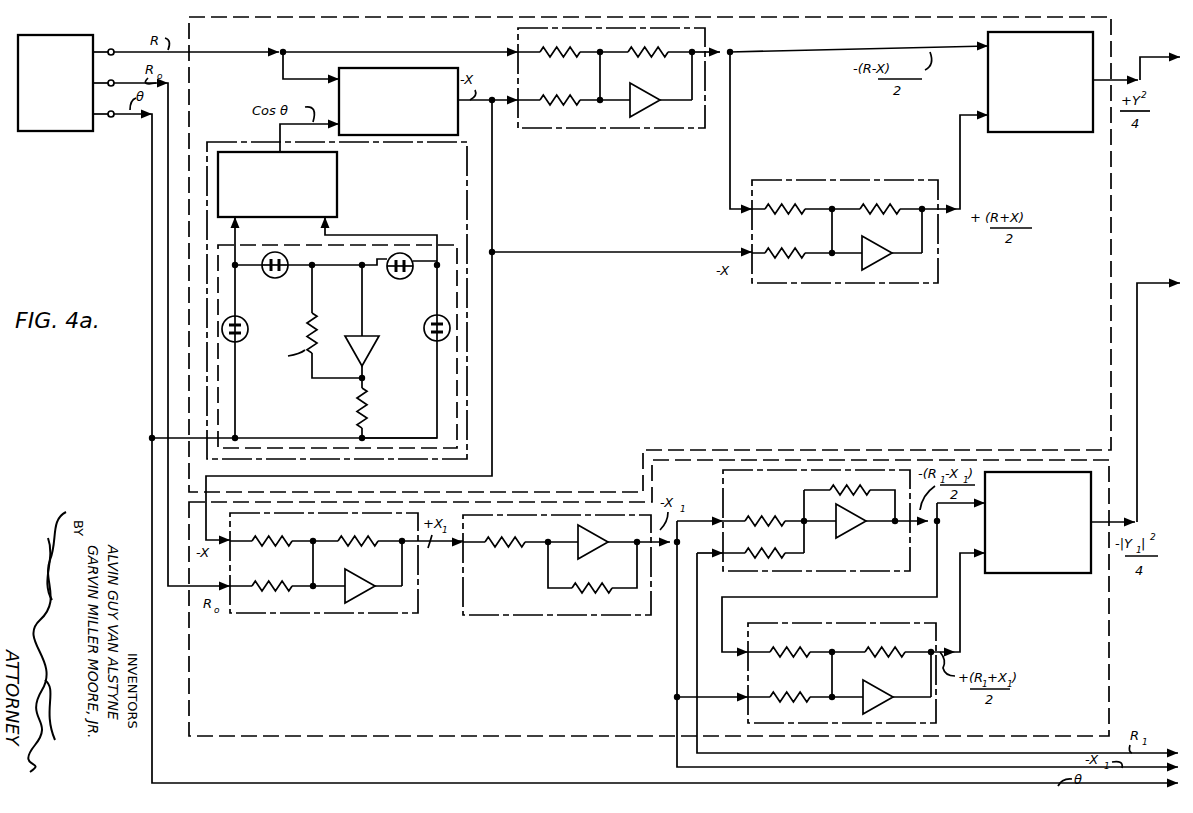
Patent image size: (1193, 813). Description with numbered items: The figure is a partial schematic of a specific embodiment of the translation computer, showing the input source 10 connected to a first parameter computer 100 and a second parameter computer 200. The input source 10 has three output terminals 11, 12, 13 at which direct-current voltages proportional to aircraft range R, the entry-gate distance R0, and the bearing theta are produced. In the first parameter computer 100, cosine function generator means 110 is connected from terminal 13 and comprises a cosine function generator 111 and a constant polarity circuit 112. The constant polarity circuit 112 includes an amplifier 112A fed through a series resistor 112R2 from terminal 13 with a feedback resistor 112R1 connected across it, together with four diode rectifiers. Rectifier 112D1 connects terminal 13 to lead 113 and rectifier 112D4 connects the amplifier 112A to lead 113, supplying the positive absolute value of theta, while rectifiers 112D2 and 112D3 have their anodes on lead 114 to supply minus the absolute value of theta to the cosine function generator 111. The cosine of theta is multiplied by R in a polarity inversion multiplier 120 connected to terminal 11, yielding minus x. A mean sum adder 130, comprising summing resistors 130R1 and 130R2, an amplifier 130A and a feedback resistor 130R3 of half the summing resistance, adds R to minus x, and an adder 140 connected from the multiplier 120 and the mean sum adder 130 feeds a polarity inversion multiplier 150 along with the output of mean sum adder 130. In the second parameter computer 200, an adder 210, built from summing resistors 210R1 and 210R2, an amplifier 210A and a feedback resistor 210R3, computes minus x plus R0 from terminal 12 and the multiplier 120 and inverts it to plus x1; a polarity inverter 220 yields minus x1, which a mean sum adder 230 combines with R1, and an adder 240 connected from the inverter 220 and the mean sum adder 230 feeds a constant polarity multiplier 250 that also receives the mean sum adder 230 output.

The input source 10 is at (53, 36).
The output terminal 11 is at (111, 49).
The output terminal 12 is at (111, 80).
The output terminal 13 is at (111, 117).
The first parameter computer 100 is at (1111, 252).
The cosine function generator means 110 is at (240, 136).
The cosine function generator 111 is at (337, 181).
The constant polarity circuit 112 is at (452, 245).
The diode rectifier 112D1 is at (250, 327).
The diode rectifier 112D2 is at (425, 330).
The diode rectifier 112D3 is at (410, 277).
The diode rectifier 112D4 is at (270, 278).
The amplifier 112A is at (350, 342).
The feedback resistor 112R1 is at (305, 368).
The series resistor 112R2 is at (368, 408).
The lead 113 is at (236, 226).
The lead 114 is at (334, 233).
The polarity inversion multiplier 120 is at (413, 60).
The mean sum adder 130 is at (610, 133).
The summing resistor 130R1 is at (547, 64).
The summing resistor 130R2 is at (547, 111).
The feedback resistor 130R3 is at (632, 64).
The amplifier 130A is at (655, 108).
The adder 140 is at (848, 176).
The polarity inversion multiplier 150 is at (1022, 136).
The second parameter computer 200 is at (1109, 643).
The adder 210 is at (316, 620).
The summing resistor 210R1 is at (257, 551).
The summing resistor 210R2 is at (262, 596).
The feedback resistor 210R3 is at (377, 558).
The amplifier 210A is at (362, 592).
The polarity inverter 220 is at (628, 618).
The mean sum adder 230 is at (815, 576).
The adder 240 is at (942, 705).
The constant polarity multiplier 250 is at (1050, 580).